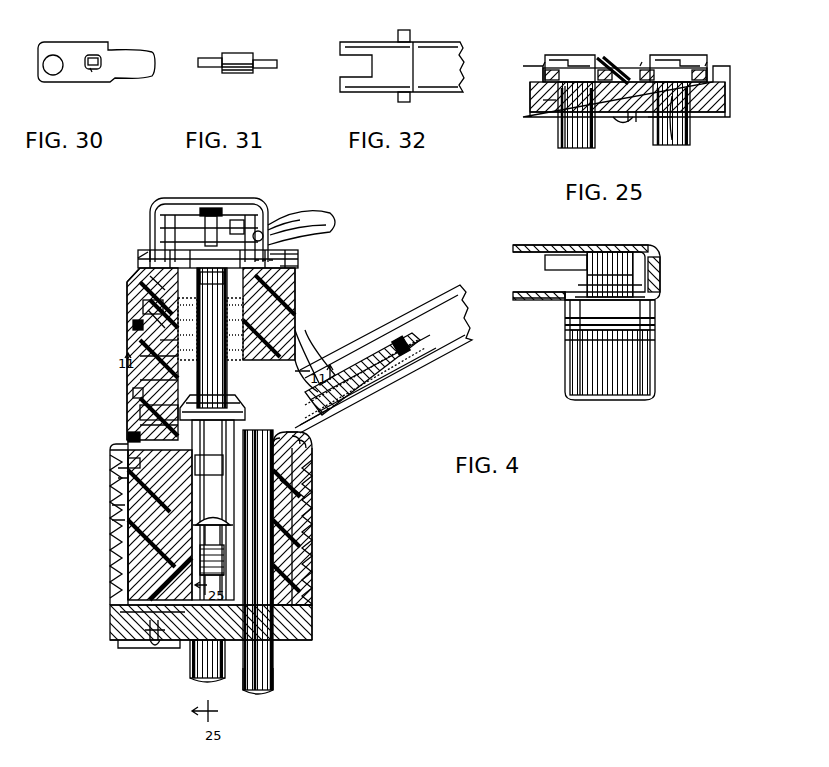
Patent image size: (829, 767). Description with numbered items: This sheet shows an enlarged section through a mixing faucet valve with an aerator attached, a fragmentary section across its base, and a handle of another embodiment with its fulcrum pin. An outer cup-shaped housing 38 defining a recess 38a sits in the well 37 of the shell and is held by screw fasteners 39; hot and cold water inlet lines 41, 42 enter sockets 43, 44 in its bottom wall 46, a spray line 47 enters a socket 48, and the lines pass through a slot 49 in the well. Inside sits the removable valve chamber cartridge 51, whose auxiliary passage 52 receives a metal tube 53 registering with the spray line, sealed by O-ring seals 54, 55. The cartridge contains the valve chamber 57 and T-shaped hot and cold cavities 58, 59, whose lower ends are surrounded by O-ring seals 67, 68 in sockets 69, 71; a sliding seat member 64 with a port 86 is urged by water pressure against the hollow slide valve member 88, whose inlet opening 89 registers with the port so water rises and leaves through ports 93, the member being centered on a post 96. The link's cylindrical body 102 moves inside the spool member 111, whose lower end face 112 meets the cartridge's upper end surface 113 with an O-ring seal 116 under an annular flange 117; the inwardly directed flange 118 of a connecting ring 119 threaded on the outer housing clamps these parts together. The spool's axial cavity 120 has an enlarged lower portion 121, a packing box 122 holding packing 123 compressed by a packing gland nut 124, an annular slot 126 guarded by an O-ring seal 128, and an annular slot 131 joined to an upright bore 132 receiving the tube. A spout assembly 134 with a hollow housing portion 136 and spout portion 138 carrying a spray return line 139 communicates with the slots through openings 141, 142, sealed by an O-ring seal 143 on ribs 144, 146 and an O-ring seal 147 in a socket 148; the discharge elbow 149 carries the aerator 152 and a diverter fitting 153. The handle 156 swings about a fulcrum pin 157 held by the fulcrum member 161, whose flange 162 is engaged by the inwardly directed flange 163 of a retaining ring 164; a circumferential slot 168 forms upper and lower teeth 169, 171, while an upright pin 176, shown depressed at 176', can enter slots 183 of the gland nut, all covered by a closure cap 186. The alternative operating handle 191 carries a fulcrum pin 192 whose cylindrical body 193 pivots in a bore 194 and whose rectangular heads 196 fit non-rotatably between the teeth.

In FIG. 30, the operating handle 191 is at (122, 72).
In FIG. 32, the operating handle 191 is at (440, 80).
In FIG. 30, the fulcrum pin 192 is at (93, 55).
In FIG. 31, the fulcrum pin 192 is at (250, 104).
In FIG. 31, the cylindrical body 193 is at (232, 60).
In FIG. 30, the bore 194 is at (91, 70).
In FIG. 30, the rectangular heads 196 is at (100, 62).
In FIG. 31, the rectangular heads 196 is at (204, 58).
In FIG. 32, the rectangular heads 196 is at (405, 31).
In FIG. 25, the well 37 is at (726, 106).
In FIG. 4, the well 37 is at (314, 612).
In FIG. 25, the outer cup-shaped housing 38 is at (714, 78).
In FIG. 4, the outer cup-shaped housing 38 is at (120, 560).
In FIG. 25, the recess 38a is at (668, 120).
In FIG. 4, the recess 38a is at (120, 614).
In FIG. 25, the screw fasteners 39 is at (633, 122).
In FIG. 4, the screw fasteners 39 is at (152, 640).
In FIG. 25, the hot water inlet line 41 is at (676, 135).
In FIG. 4, the hot water inlet line 41 is at (196, 672).
In FIG. 25, the cold water inlet line 42 is at (576, 150).
In FIG. 25, the socket 43 is at (692, 128).
In FIG. 25, the socket 44 is at (556, 100).
In FIG. 25, the bottom wall 46 is at (612, 118).
In FIG. 4, the bottom wall 46 is at (125, 644).
In FIG. 4, the spray line 47 is at (262, 690).
In FIG. 4, the socket 48 is at (275, 660).
In FIG. 25, the slot 49 is at (578, 92).
In FIG. 25, the inner valve housing or valve chamber cartridge 51 is at (630, 76).
In FIG. 4, the inner valve housing or valve chamber cartridge 51 is at (112, 490).
In FIG. 4, the upright bore or auxiliary passage 52 is at (308, 514).
In FIG. 4, the metal tube 53 is at (307, 497).
In FIG. 4, the O-ring seal 54 is at (312, 575).
In FIG. 4, the O-ring seal 55 is at (300, 488).
In FIG. 4, the valve chamber 57 is at (125, 530).
In FIG. 25, the hot water inlet cavity 58 is at (676, 55).
In FIG. 25, the cold water inlet cavity 59 is at (564, 58).
In FIG. 4, the sliding seat member 64 is at (200, 572).
In FIG. 25, the O-ring seal 67 is at (706, 62).
In FIG. 25, the O-ring seal 68 is at (547, 62).
In FIG. 25, the socket 69 is at (641, 62).
In FIG. 25, the socket 71 is at (603, 56).
In FIG. 4, the port 86 is at (202, 532).
In FIG. 4, the slide valve member 88 is at (140, 427).
In FIG. 4, the inlet opening 89 is at (206, 505).
In FIG. 4, the ports 93 is at (296, 446).
In FIG. 4, the post 96 is at (198, 590).
In FIG. 4, the cylindrical body 102 is at (178, 330).
In FIG. 4, the spool member 111 is at (150, 282).
In FIG. 4, the lower end face 112 is at (120, 482).
In FIG. 4, the upper face or end surface 113 is at (125, 446).
In FIG. 4, the O-ring seal 116 is at (298, 472).
In FIG. 4, the annular flange 117 is at (296, 458).
In FIG. 4, the inwardly directed flange 118 is at (118, 456).
In FIG. 4, the connecting ring 119 is at (112, 510).
In FIG. 4, the axial cavity 120 is at (150, 342).
In FIG. 4, the enlarged lower portion 121 is at (125, 464).
In FIG. 4, the packing box 122 is at (300, 282).
In FIG. 4, the packing 123 is at (300, 300).
In FIG. 4, the packing gland nut 124 is at (152, 262).
In FIG. 4, the annular slot 126 is at (135, 325).
In FIG. 4, the O-ring seal 128 is at (135, 396).
In FIG. 4, the annular slot 131 is at (142, 412).
In FIG. 4, the upright bore 132 is at (300, 430).
In FIG. 4, the spout assembly 134 is at (318, 368).
In FIG. 4, the hollow housing portion 136 is at (318, 355).
In FIG. 4, the spout portion 138 is at (464, 318).
In FIG. 4, the spray return line 139 is at (396, 343).
In FIG. 4, the opening 141 is at (340, 345).
In FIG. 4, the opening 142 is at (150, 310).
In FIG. 4, the O-ring seal 143 is at (140, 382).
In FIG. 4, the rib 144 is at (140, 300).
In FIG. 4, the rib 146 is at (140, 358).
In FIG. 4, the O-ring seal 147 is at (130, 436).
In FIG. 4, the socket 148 is at (303, 442).
In FIG. 4, the discharge elbow 149 is at (656, 282).
In FIG. 4, the aerator 152 is at (612, 395).
In FIG. 4, the diverter fitting 153 is at (656, 322).
In FIG. 4, the operating handle 156 is at (330, 228).
In FIG. 4, the fulcrum pin 157 is at (272, 232).
In FIG. 4, the fulcrum member 161 is at (172, 202).
In FIG. 4, the flange 162 is at (147, 226).
In FIG. 4, the inwardly directed flange 163 is at (142, 256).
In FIG. 4, the retaining ring 164 is at (137, 275).
In FIG. 4, the circumferential slot 168 is at (237, 218).
In FIG. 4, the upper tooth 169 is at (262, 232).
In FIG. 4, the lower tooth 171 is at (300, 252).
In FIG. 4, the upright pin 176 is at (224, 205).
In FIG. 4, the depressed position of upright pin 176' is at (305, 253).
In FIG. 4, the slots 183 is at (300, 266).
In FIG. 4, the closure cap 186 is at (180, 205).